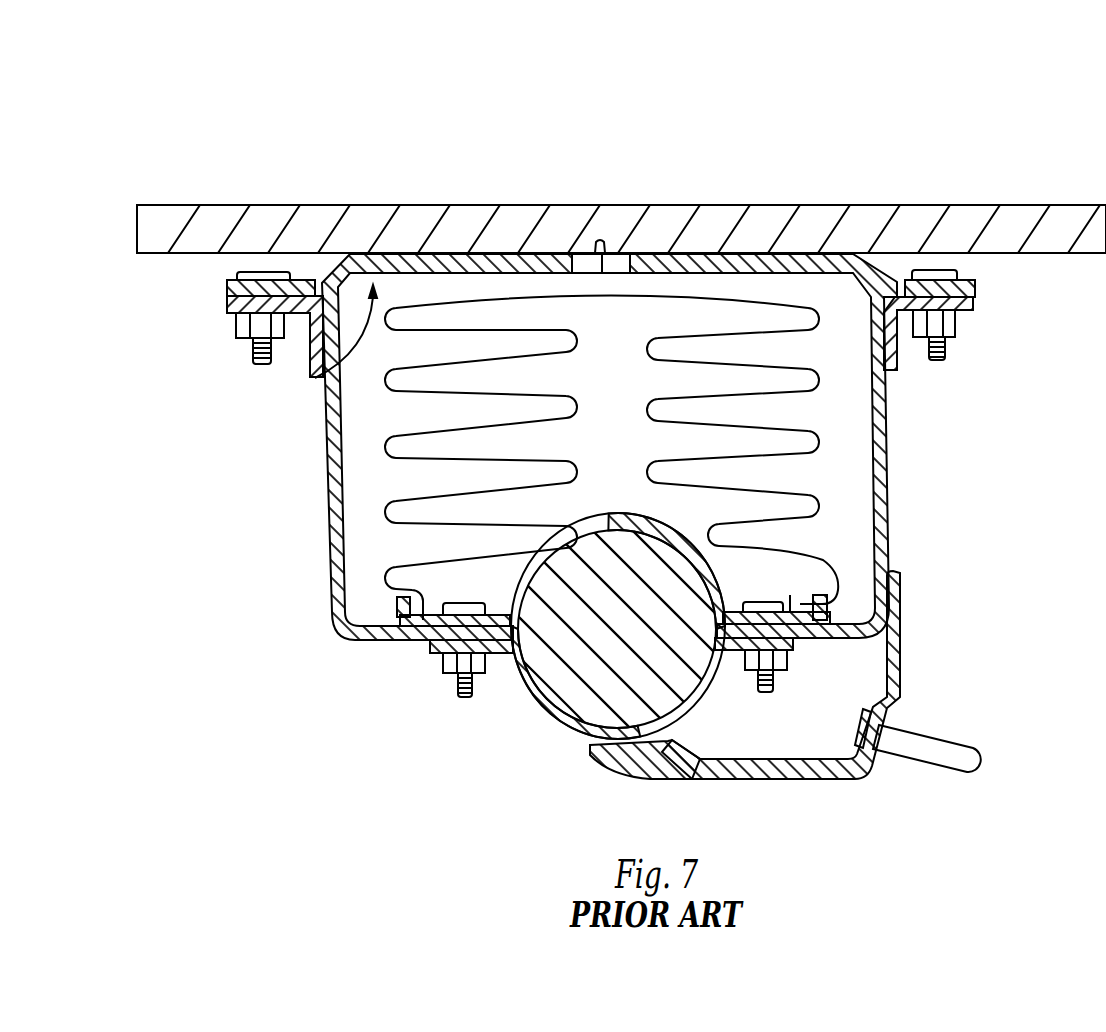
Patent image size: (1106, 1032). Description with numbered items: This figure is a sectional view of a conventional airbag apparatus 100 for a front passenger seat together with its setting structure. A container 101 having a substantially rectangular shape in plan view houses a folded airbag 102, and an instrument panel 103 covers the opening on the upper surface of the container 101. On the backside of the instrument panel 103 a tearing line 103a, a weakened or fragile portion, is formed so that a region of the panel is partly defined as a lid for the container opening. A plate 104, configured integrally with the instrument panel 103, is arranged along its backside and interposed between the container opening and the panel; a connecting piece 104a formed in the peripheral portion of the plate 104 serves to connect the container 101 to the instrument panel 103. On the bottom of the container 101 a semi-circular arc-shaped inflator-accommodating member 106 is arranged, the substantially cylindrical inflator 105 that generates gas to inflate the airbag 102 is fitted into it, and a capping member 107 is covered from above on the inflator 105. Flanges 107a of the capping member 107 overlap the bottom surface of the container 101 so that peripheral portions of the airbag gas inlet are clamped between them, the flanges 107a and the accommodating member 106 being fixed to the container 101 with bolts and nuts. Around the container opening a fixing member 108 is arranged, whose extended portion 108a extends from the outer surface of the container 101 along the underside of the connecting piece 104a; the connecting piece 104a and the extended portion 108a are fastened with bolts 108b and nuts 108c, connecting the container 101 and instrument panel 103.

The airbag apparatus 100 is at (983, 130).
The container 101 is at (889, 513).
The airbag 102 is at (498, 327).
The instrument panel 103 is at (888, 203).
The tearing line 103a is at (603, 200).
The plate 104 is at (322, 387).
The connecting piece 104a is at (227, 286).
The inflator 105 is at (580, 680).
The inflator-accommodating member 106 is at (517, 687).
The capping member 107 is at (597, 516).
The flanges 107a is at (390, 588).
The fixing member 108 is at (898, 349).
The extended portion 108a is at (973, 310).
The bolts 108b is at (248, 356).
The nuts 108c is at (237, 322).